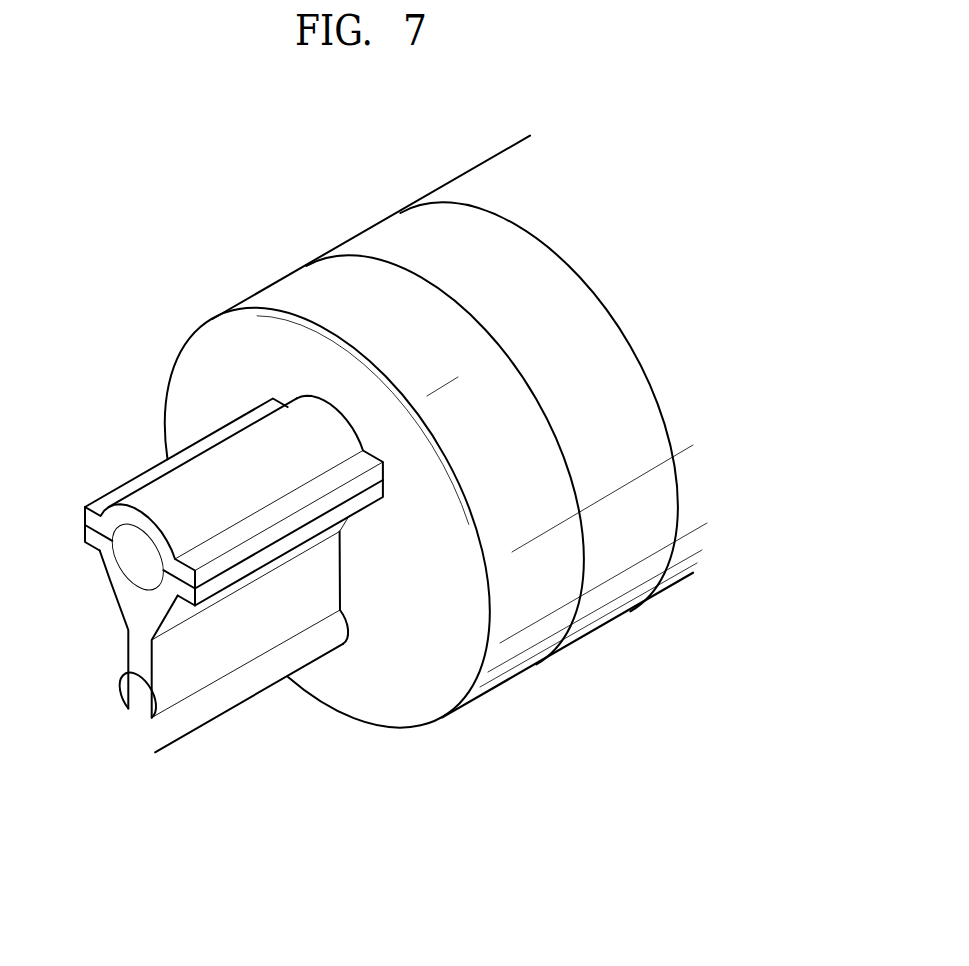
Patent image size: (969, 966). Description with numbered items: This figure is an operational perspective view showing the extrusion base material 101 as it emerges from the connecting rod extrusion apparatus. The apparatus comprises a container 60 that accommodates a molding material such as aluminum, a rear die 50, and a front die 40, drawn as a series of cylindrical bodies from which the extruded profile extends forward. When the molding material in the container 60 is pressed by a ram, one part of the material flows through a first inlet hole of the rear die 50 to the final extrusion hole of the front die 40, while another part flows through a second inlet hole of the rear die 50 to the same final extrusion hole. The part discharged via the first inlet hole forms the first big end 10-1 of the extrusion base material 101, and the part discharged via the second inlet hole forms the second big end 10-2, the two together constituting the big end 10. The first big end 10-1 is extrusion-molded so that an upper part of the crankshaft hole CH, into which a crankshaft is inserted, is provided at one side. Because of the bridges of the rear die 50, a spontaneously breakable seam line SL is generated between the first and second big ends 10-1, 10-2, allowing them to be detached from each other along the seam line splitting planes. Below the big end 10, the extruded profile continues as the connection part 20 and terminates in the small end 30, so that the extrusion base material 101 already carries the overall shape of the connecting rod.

The big end 10 is at (234, 623).
The first big end 10-1 is at (253, 543).
The second big end 10-2 is at (209, 588).
The connection part 20 is at (136, 675).
The small end 30 is at (142, 741).
The front die 40 is at (280, 293).
The rear die 50 is at (368, 243).
The container 60 is at (473, 177).
The extrusion base material 101 is at (231, 612).
The crankshaft hole CH is at (153, 553).
The seam line SL is at (312, 520).